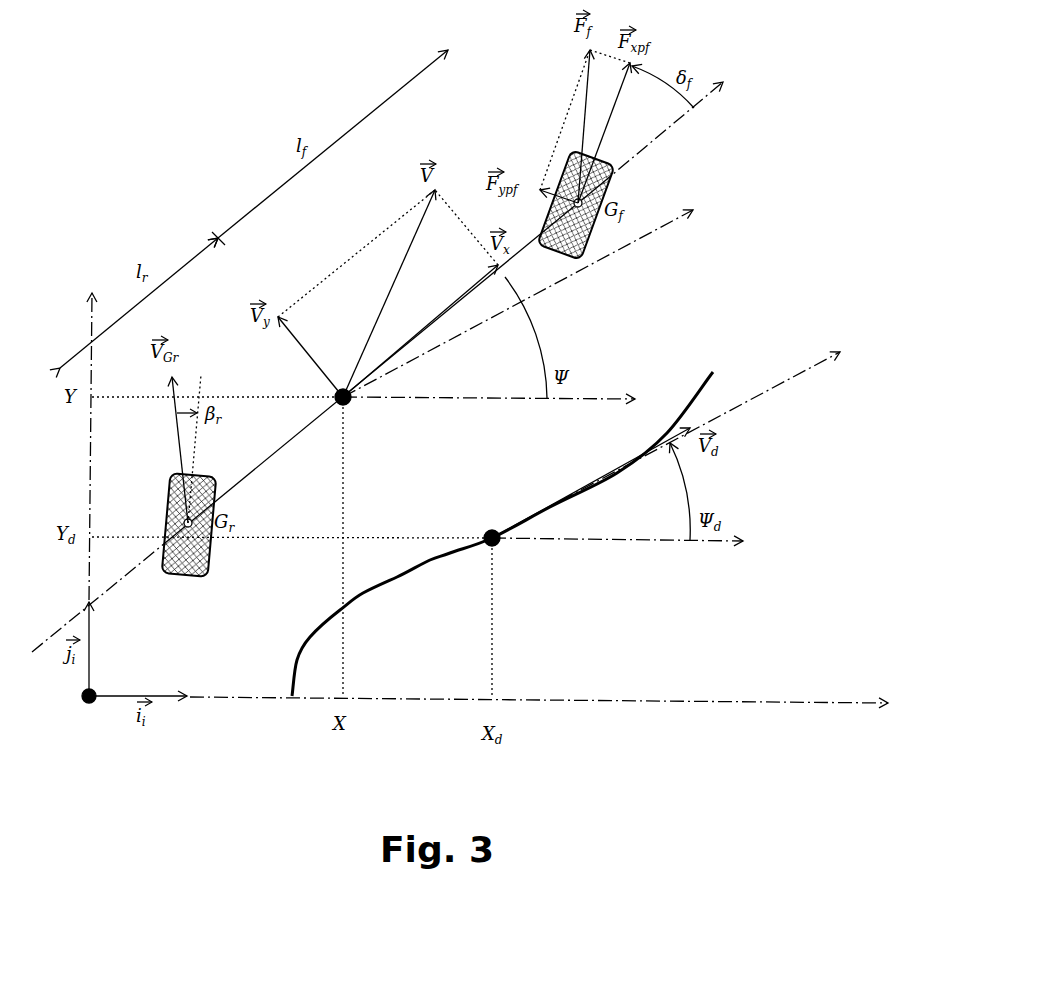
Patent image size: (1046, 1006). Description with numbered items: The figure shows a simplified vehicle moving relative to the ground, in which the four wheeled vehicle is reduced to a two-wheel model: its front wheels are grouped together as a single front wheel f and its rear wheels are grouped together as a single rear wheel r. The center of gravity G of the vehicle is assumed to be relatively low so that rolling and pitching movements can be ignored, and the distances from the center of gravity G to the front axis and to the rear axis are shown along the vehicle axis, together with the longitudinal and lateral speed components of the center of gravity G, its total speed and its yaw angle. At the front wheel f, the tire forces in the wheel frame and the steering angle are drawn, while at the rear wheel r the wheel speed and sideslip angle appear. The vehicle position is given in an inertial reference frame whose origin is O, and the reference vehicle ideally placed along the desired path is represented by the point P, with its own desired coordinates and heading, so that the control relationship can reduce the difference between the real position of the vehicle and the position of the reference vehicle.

The front wheel f is at (613, 180).
The rear wheel r is at (168, 502).
The center of gravity G is at (412, 308).
The target point on desired path P is at (566, 524).
The origin of inertial frame O is at (475, 509).